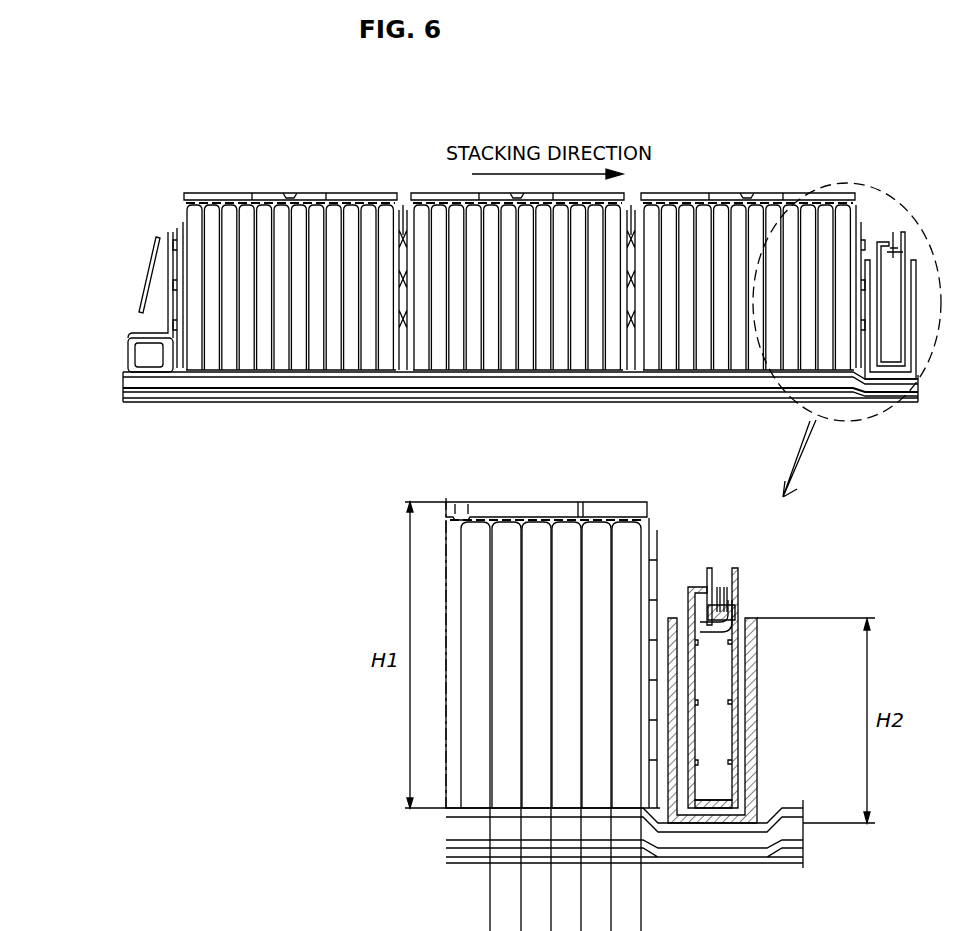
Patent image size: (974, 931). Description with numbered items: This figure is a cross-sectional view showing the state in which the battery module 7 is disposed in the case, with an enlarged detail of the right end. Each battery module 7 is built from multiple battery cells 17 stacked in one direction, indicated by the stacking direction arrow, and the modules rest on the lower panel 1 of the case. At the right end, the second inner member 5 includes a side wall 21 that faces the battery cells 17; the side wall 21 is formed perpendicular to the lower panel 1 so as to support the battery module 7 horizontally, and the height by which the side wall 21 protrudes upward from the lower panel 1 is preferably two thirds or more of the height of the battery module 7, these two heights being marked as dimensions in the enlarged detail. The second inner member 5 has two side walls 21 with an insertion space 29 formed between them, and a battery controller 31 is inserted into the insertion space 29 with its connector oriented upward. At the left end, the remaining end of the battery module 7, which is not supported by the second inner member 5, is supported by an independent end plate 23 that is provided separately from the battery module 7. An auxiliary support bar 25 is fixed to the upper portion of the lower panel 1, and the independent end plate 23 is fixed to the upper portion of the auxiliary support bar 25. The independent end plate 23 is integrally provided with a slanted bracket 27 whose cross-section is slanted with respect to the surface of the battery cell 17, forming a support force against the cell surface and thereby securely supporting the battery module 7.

The lower panel 1 is at (233, 373).
The second inner member 5 is at (770, 744).
The battery module 7 is at (328, 184).
The battery cell 17 is at (347, 360).
The side wall 21 is at (755, 665).
The independent end plate 23 is at (168, 293).
The auxiliary support bar 25 is at (130, 352).
The slanted bracket 27 is at (147, 268).
The insertion space 29 is at (738, 815).
The battery controller 31 is at (738, 616).